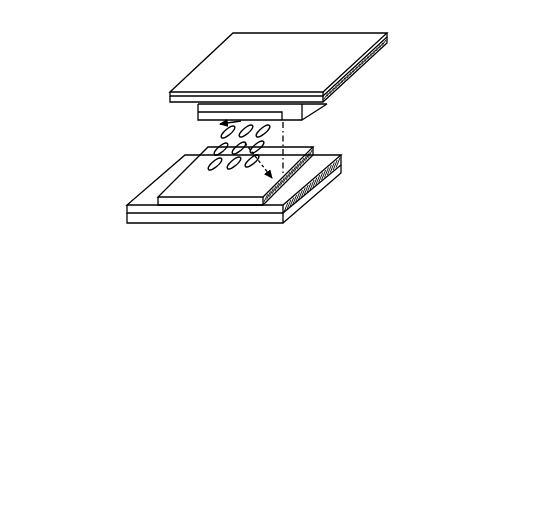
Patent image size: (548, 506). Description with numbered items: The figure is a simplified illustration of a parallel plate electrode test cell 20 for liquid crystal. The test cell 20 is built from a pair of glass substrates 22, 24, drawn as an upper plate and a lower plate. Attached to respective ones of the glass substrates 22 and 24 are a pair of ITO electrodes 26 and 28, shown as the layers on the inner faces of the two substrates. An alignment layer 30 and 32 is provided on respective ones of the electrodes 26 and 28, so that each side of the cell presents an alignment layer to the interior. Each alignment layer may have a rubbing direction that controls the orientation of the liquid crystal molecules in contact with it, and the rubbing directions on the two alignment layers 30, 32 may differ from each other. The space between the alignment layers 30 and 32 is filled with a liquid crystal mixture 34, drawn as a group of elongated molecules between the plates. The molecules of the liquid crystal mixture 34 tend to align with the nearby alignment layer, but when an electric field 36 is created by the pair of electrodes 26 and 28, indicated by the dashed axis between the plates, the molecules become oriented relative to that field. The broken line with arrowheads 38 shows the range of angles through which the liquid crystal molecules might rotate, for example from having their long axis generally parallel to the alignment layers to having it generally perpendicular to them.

The parallel plate electrode test cell 20 is at (339, 213).
The glass substrate 22 is at (373, 61).
The glass substrate 24 is at (307, 198).
The ITO electrode 26 is at (352, 85).
The ITO electrode 28 is at (305, 176).
The alignment layer 30 is at (195, 115).
The alignment layer 32 is at (158, 190).
The liquid crystal mixture 34 is at (205, 148).
The electric field 36 is at (288, 138).
The broken line with arrowheads 38 is at (250, 142).